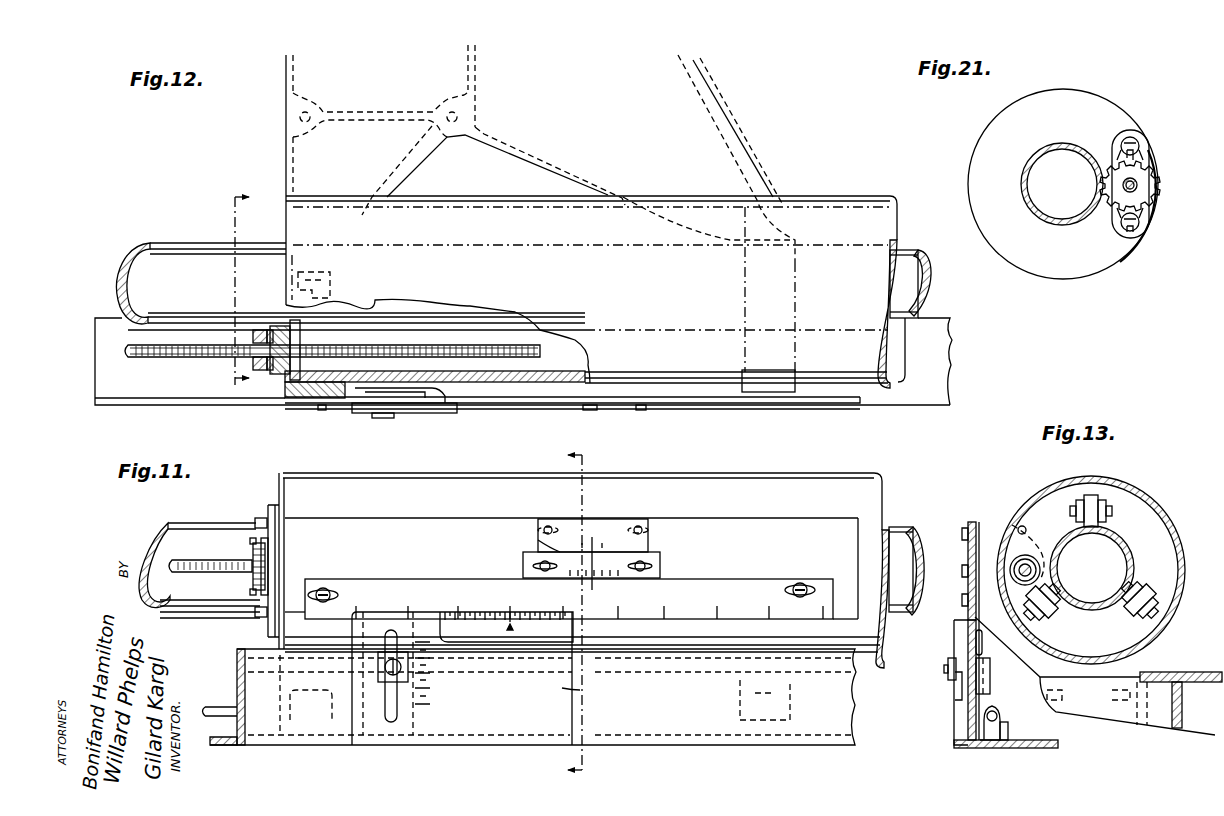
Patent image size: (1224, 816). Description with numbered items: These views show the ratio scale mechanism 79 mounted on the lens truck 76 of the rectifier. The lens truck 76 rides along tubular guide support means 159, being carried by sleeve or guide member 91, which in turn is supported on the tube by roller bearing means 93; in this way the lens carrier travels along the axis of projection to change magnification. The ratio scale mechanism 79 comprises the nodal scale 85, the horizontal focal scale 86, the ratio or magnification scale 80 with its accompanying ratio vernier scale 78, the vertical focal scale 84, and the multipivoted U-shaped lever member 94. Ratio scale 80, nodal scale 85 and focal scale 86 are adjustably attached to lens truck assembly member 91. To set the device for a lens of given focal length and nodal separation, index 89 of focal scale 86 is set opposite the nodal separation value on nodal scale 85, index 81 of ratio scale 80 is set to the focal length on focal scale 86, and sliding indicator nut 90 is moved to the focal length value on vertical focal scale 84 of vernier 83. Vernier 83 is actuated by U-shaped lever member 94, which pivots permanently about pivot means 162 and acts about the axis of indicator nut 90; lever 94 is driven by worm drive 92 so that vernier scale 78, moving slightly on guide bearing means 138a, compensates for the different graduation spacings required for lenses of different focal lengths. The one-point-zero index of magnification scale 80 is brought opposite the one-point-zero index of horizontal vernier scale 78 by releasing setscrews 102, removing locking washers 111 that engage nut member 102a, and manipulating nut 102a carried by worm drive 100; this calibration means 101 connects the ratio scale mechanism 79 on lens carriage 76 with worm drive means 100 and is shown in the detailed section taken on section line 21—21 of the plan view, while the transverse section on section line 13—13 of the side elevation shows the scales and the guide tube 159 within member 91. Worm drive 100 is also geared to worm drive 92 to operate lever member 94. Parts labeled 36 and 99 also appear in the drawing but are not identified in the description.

In FIG. 11, the section line 13 is at (558, 615).
In FIG. 12, the section line 21 is at (247, 289).
In FIG. 12, the base 36 is at (940, 372).
In FIG. 11, the base 36 is at (652, 735).
In FIG. 13, the base 36 is at (1050, 748).
In FIG. 12, the lens truck 76 is at (286, 158).
In FIG. 13, the lens truck 76 is at (1135, 728).
In FIG. 11, the ratio vernier scale 78 is at (522, 630).
In FIG. 13, the ratio vernier scale 78 is at (965, 630).
In FIG. 11, the ratio scale mechanism 79 is at (408, 566).
In FIG. 12, the ratio or magnification scale 80 is at (726, 403).
In FIG. 11, the ratio or magnification scale 80 is at (478, 585).
In FIG. 13, the ratio or magnification scale 80 is at (962, 604).
In FIG. 11, the index of ratio scale 81 is at (594, 584).
In FIG. 12, the vernier means 83 is at (373, 413).
In FIG. 11, the vernier means 83 is at (574, 690).
In FIG. 13, the vernier means 83 is at (954, 740).
In FIG. 11, the vertical focal scale 84 is at (428, 688).
In FIG. 12, the nodal scale 85 is at (603, 410).
In FIG. 11, the nodal scale 85 is at (606, 548).
In FIG. 13, the nodal scale 85 is at (975, 520).
In FIG. 12, the horizontal focal scale 86 is at (650, 410).
In FIG. 11, the horizontal focal scale 86 is at (628, 560).
In FIG. 13, the horizontal focal scale 86 is at (964, 568).
In FIG. 11, the index of focal scale 89 is at (545, 548).
In FIG. 12, the sliding indicator nut 90 is at (392, 416).
In FIG. 11, the sliding indicator nut 90 is at (378, 660).
In FIG. 13, the sliding indicator nut 90 is at (950, 672).
In FIG. 12, the lens truck assembly member 91 is at (828, 204).
In FIG. 21, the lens truck assembly member 91 is at (1110, 108).
In FIG. 11, the lens truck assembly member 91 is at (760, 480).
In FIG. 13, the lens truck assembly member 91 is at (1172, 612).
In FIG. 11, the worm drive 92 is at (225, 706).
In FIG. 13, the worm drive 92 is at (994, 742).
In FIG. 12, the roller bearing means 93 is at (335, 285).
In FIG. 13, the roller bearing means 93 is at (1094, 497).
In FIG. 13, the multipivoted U-shaped lever member 94 is at (975, 645).
In FIG. 21, the pinion 99 is at (1140, 188).
In FIG. 13, the pinion 99 is at (1028, 556).
In FIG. 12, the worm drive 100 is at (162, 352).
In FIG. 11, the worm drive 100 is at (176, 562).
In FIG. 12, the calibration means 101 is at (250, 365).
In FIG. 21, the calibration means 101 is at (1160, 172).
In FIG. 11, the calibration means 101 is at (250, 572).
In FIG. 21, the setscrews 102 is at (1138, 140).
In FIG. 11, the setscrews 102 is at (254, 522).
In FIG. 12, the nut member 102a is at (266, 340).
In FIG. 21, the nut member 102a is at (1120, 180).
In FIG. 11, the nut member 102a is at (252, 552).
In FIG. 21, the locking washers 111 is at (1118, 152).
In FIG. 11, the locking washers 111 is at (270, 515).
In FIG. 13, the guide bearing means 138a is at (960, 692).
In FIG. 12, the guide support means 159 is at (210, 252).
In FIG. 21, the guide support means 159 is at (1040, 218).
In FIG. 11, the guide support means 159 is at (166, 530).
In FIG. 13, the guide support means 159 is at (1124, 546).
In FIG. 12, the pivot means 162 is at (450, 405).
In FIG. 13, the pivot means 162 is at (990, 686).